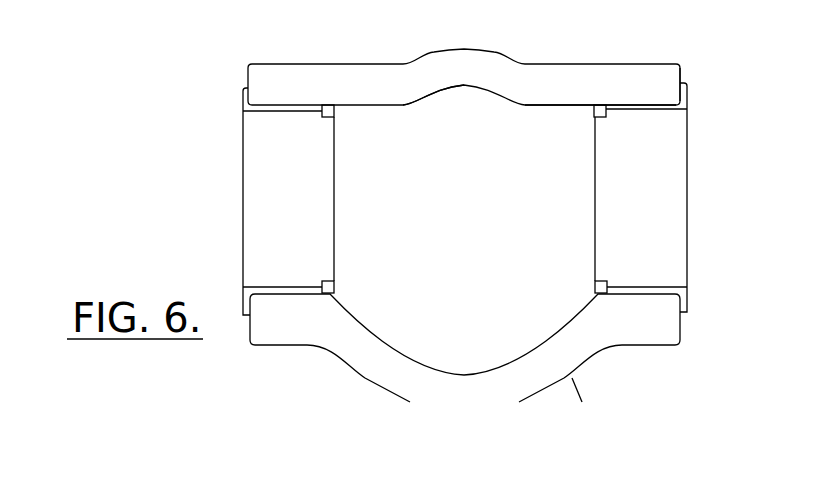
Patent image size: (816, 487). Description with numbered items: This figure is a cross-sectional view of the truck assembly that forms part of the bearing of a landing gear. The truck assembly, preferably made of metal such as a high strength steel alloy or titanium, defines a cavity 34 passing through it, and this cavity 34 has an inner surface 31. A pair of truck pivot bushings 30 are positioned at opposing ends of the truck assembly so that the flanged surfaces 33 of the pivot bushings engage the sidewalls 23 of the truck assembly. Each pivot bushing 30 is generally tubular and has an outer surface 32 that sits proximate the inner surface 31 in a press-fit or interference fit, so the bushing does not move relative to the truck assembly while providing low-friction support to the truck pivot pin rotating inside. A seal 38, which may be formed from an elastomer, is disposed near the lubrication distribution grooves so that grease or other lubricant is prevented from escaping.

The sidewall 23 is at (678, 63).
The truck pivot bushing 30 is at (688, 128).
The inner surface 31 is at (363, 107).
The outer surface 32 is at (622, 100).
The flanged surface 33 is at (678, 95).
The cavity 34 is at (222, 192).
The seal 38 is at (335, 285).